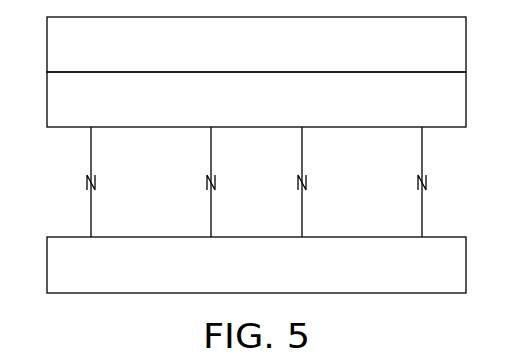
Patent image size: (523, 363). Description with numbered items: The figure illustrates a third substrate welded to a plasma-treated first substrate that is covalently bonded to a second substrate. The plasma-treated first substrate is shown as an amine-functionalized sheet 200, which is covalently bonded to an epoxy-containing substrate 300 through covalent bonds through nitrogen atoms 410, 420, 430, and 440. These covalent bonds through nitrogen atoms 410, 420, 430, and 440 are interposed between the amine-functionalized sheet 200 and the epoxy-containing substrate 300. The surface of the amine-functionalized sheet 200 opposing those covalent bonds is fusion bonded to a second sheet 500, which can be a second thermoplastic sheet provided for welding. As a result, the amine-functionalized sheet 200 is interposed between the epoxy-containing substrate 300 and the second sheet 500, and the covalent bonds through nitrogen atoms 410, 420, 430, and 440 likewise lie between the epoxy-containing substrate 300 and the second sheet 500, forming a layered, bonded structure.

The second sheet 500 is at (277, 60).
The amine-functionalized sheet 200 is at (277, 116).
The epoxy-containing substrate 300 is at (277, 282).
The covalent bond through nitrogen atom 410 is at (422, 203).
The covalent bond through nitrogen atom 420 is at (302, 203).
The covalent bond through nitrogen atom 430 is at (211, 203).
The covalent bond through nitrogen atom 440 is at (91, 203).